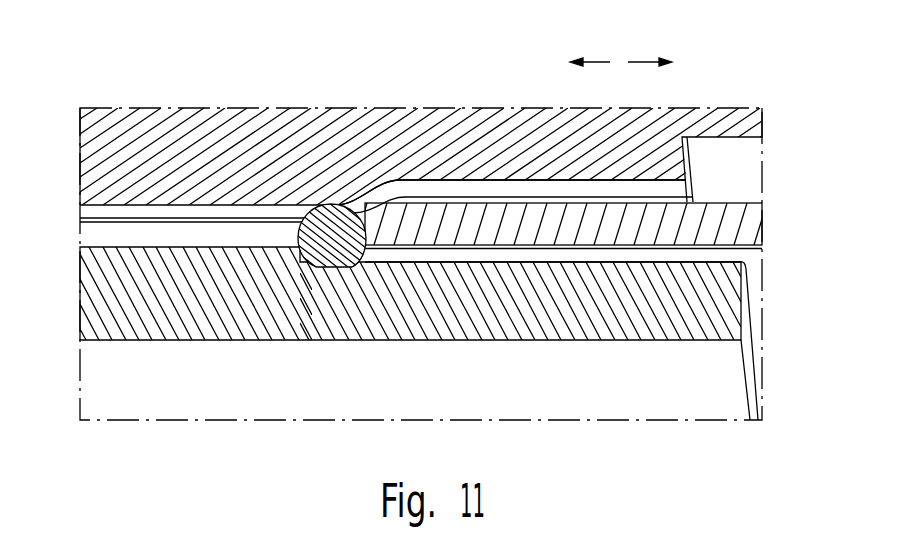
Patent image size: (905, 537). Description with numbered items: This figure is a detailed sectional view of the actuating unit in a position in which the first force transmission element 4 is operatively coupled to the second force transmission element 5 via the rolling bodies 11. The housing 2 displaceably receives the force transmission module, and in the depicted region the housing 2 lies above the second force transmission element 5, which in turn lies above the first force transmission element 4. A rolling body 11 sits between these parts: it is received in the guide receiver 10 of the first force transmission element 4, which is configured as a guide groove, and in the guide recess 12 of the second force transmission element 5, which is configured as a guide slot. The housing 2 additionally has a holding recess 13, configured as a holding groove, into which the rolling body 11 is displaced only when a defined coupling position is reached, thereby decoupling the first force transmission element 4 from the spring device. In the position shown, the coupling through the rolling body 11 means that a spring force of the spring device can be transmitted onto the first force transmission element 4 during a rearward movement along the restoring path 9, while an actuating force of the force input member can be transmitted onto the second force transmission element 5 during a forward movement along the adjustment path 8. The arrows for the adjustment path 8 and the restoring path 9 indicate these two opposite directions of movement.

The housing 2 is at (223, 143).
The first force transmission element 4 is at (118, 295).
The second force transmission element 5 is at (738, 228).
The adjustment path 8 is at (643, 62).
The restoring path 9 is at (596, 62).
The guide receiver 10 is at (542, 262).
The rolling body 11 is at (330, 237).
The guide recess 12 is at (165, 235).
The holding recess 13 is at (470, 198).